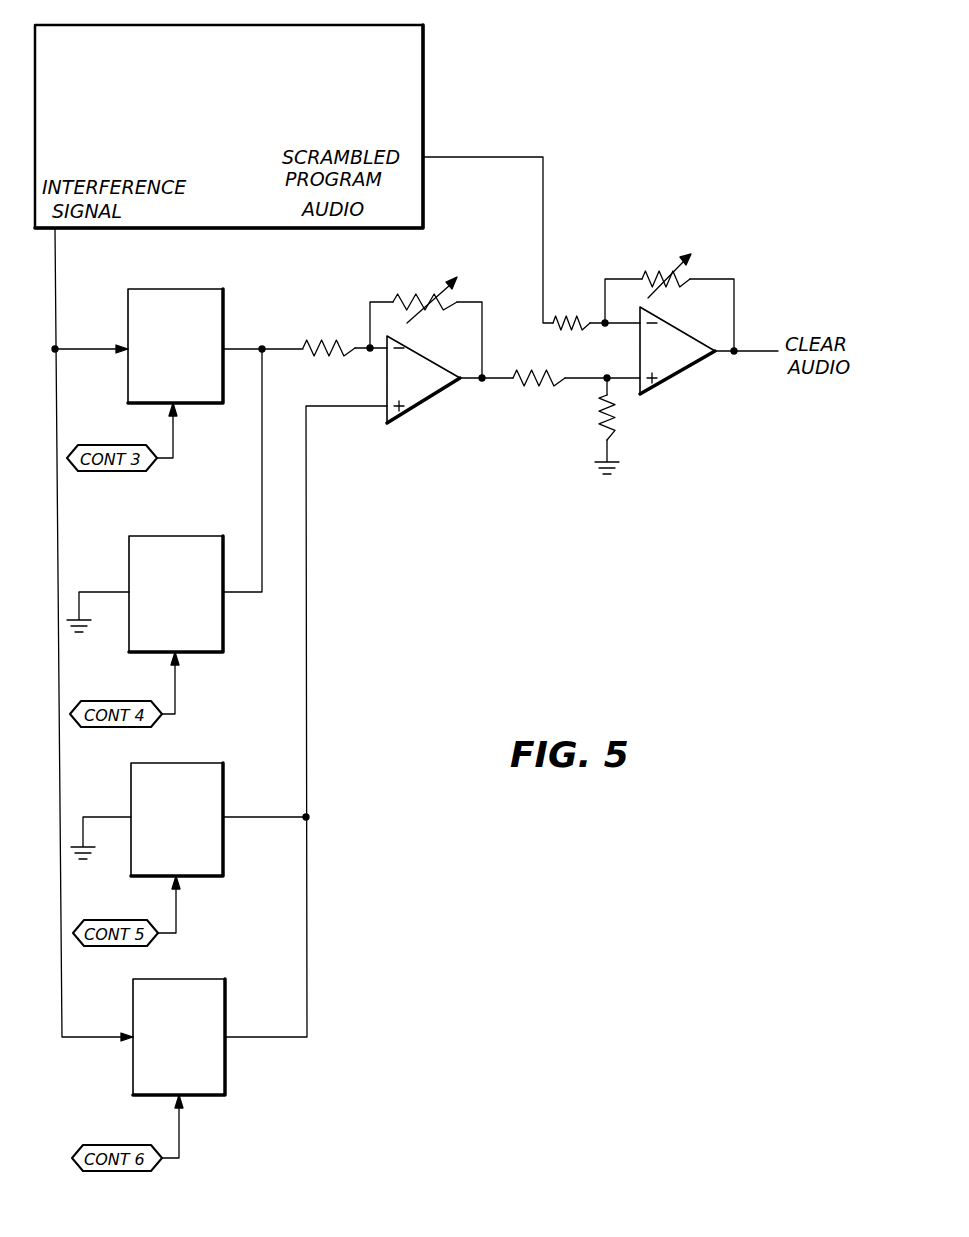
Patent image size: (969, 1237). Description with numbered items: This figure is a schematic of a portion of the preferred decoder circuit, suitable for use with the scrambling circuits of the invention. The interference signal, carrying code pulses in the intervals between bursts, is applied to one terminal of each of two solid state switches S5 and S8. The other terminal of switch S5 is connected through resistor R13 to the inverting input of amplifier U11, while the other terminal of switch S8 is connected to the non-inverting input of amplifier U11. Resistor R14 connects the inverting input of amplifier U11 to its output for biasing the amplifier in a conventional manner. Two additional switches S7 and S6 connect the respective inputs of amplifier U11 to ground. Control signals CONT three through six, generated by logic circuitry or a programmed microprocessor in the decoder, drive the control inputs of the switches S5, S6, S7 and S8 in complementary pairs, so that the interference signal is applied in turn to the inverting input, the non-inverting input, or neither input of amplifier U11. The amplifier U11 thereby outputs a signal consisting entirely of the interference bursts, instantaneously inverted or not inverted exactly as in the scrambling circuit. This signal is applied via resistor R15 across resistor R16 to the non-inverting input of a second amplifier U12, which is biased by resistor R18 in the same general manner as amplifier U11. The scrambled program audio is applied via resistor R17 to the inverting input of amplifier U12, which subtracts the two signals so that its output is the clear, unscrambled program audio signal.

The solid state switch S5 is at (192, 396).
The switch S6 is at (194, 645).
The switch S7 is at (196, 869).
The solid state switch S8 is at (205, 1080).
The resistor R13 is at (338, 340).
The resistor R14 is at (420, 294).
The resistor R15 is at (527, 386).
The resistor R16 is at (614, 420).
The resistor R17 is at (578, 316).
The resistor R18 is at (660, 271).
The amplifier U11 is at (418, 400).
The amplifier U12 is at (672, 372).